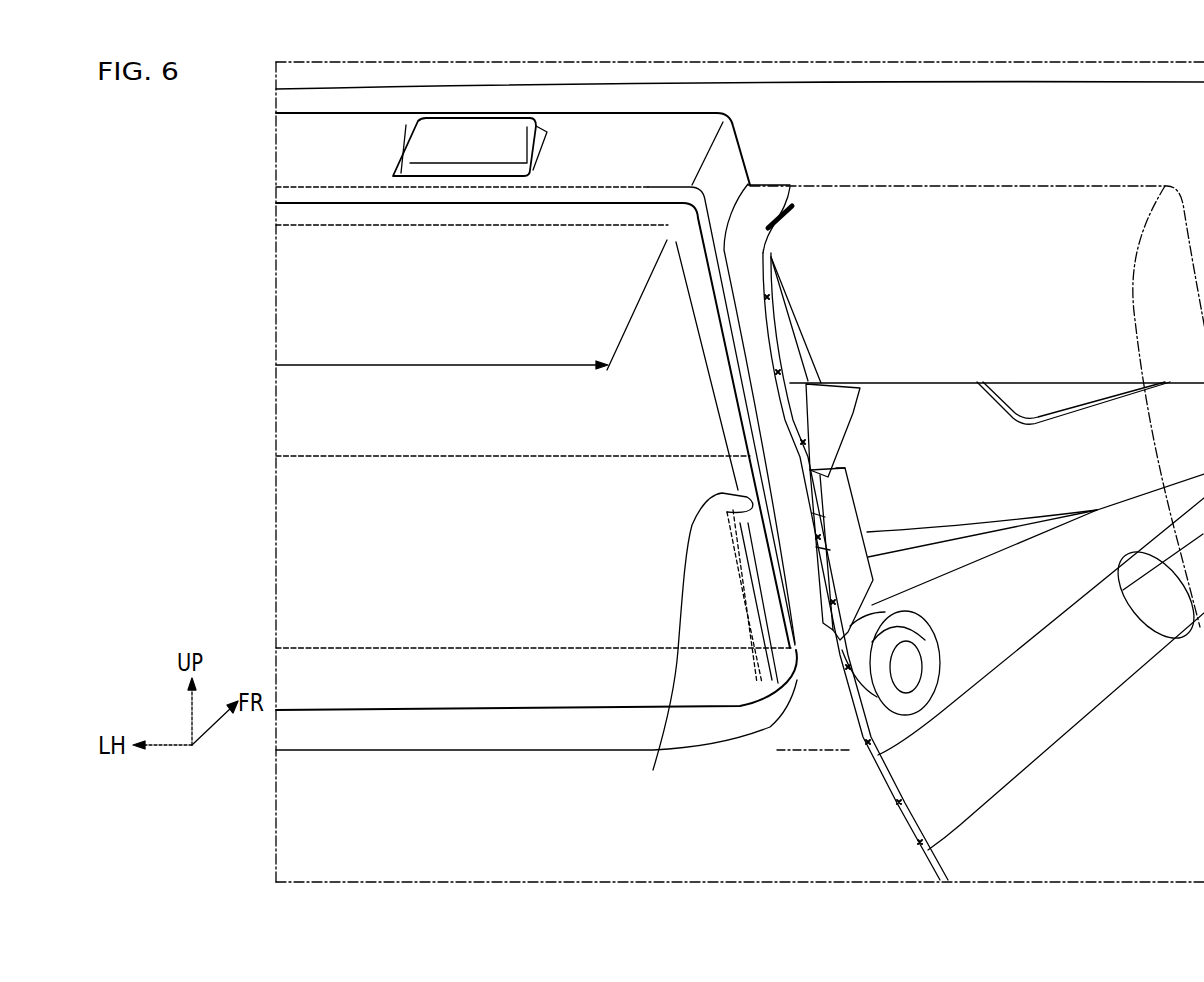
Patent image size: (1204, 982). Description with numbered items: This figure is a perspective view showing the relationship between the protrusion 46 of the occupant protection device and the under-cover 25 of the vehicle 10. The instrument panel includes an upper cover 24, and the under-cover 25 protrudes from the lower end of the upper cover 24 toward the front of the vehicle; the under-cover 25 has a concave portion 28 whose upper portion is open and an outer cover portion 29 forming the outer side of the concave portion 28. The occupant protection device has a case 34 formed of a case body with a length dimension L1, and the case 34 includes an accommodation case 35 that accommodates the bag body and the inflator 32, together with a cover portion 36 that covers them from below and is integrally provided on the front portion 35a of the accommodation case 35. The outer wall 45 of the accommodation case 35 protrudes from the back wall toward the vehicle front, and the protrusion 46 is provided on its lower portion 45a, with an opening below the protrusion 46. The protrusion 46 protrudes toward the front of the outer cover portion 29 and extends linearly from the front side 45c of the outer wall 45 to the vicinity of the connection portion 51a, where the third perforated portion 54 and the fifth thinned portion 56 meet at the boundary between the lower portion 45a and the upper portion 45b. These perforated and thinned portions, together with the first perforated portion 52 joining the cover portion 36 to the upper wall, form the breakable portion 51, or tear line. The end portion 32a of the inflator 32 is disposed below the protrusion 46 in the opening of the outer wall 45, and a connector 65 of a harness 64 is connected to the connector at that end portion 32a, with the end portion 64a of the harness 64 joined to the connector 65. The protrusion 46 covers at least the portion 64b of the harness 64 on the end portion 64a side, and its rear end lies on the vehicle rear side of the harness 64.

The vehicle 10 is at (262, 95).
The upper cover 24 is at (927, 72).
The under-cover 25 is at (300, 808).
The concave portion 28 is at (490, 733).
The outer cover portion 29 is at (775, 450).
The inflator 32 is at (530, 650).
The end portion of the inflator 32a is at (797, 655).
The case 34 is at (185, 118).
The accommodation case 35 is at (330, 142).
The front portion of the accommodation case 35a is at (738, 388).
The cover portion 36 is at (318, 285).
The outer wall 45 is at (783, 343).
The lower portion of the outer wall 45a is at (767, 567).
The upper portion of the outer wall 45b is at (780, 313).
The front side of the outer wall 45c is at (805, 373).
The protrusion 46 is at (823, 417).
The breakable portion 51 is at (655, 182).
The connection portion 51a is at (694, 646).
The first perforated portion 52 is at (512, 200).
The third perforated portion 54 is at (720, 343).
The fifth thinned portion 56 is at (757, 628).
The harness 64 is at (1030, 616).
The end portion of the harness 64a is at (877, 618).
The portion on the end portion side of the harness 64b is at (910, 628).
The connector of the harness 65 is at (920, 532).
The length dimension L1 is at (430, 365).